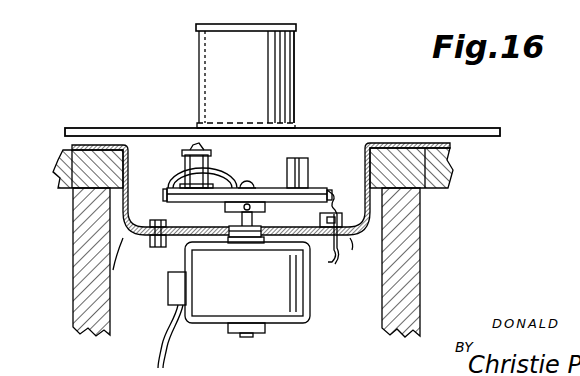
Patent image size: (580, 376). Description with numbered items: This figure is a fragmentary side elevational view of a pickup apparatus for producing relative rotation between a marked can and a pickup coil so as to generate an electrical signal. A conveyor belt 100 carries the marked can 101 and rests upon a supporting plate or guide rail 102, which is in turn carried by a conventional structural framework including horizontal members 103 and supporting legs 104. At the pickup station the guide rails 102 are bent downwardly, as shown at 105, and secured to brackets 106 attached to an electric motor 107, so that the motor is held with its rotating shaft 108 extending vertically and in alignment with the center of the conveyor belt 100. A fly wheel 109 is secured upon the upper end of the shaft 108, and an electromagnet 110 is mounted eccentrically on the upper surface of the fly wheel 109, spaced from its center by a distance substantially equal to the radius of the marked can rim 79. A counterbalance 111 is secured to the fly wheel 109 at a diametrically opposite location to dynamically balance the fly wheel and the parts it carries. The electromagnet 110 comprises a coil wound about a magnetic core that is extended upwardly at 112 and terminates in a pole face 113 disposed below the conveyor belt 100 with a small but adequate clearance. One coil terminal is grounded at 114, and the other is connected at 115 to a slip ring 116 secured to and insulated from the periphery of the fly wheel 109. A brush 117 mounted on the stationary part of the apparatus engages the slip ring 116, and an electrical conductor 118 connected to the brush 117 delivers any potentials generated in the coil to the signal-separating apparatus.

The marked can rim 79 is at (300, 127).
The conveyor belt 100 is at (428, 128).
The marked can 101 is at (298, 29).
The supporting plate or guide rail 102 is at (426, 188).
The horizontal members 103 is at (60, 187).
The supporting legs 104 is at (73, 248).
The downwardly bent portion 105 is at (118, 250).
The brackets 106 is at (160, 247).
The electric motor 107 is at (298, 320).
The rotating shaft 108 is at (225, 207).
The fly wheel 109 is at (325, 189).
The electromagnet 110 is at (210, 170).
The counterbalance 111 is at (306, 165).
The upwardly extended magnetic core 112 is at (212, 155).
The pole face 113 is at (190, 148).
The ground connection 114 is at (250, 183).
The coil terminal connection 115 is at (170, 180).
The slip ring 116 is at (167, 197).
The brush 117 is at (334, 196).
The electrical conductor 118 is at (329, 262).